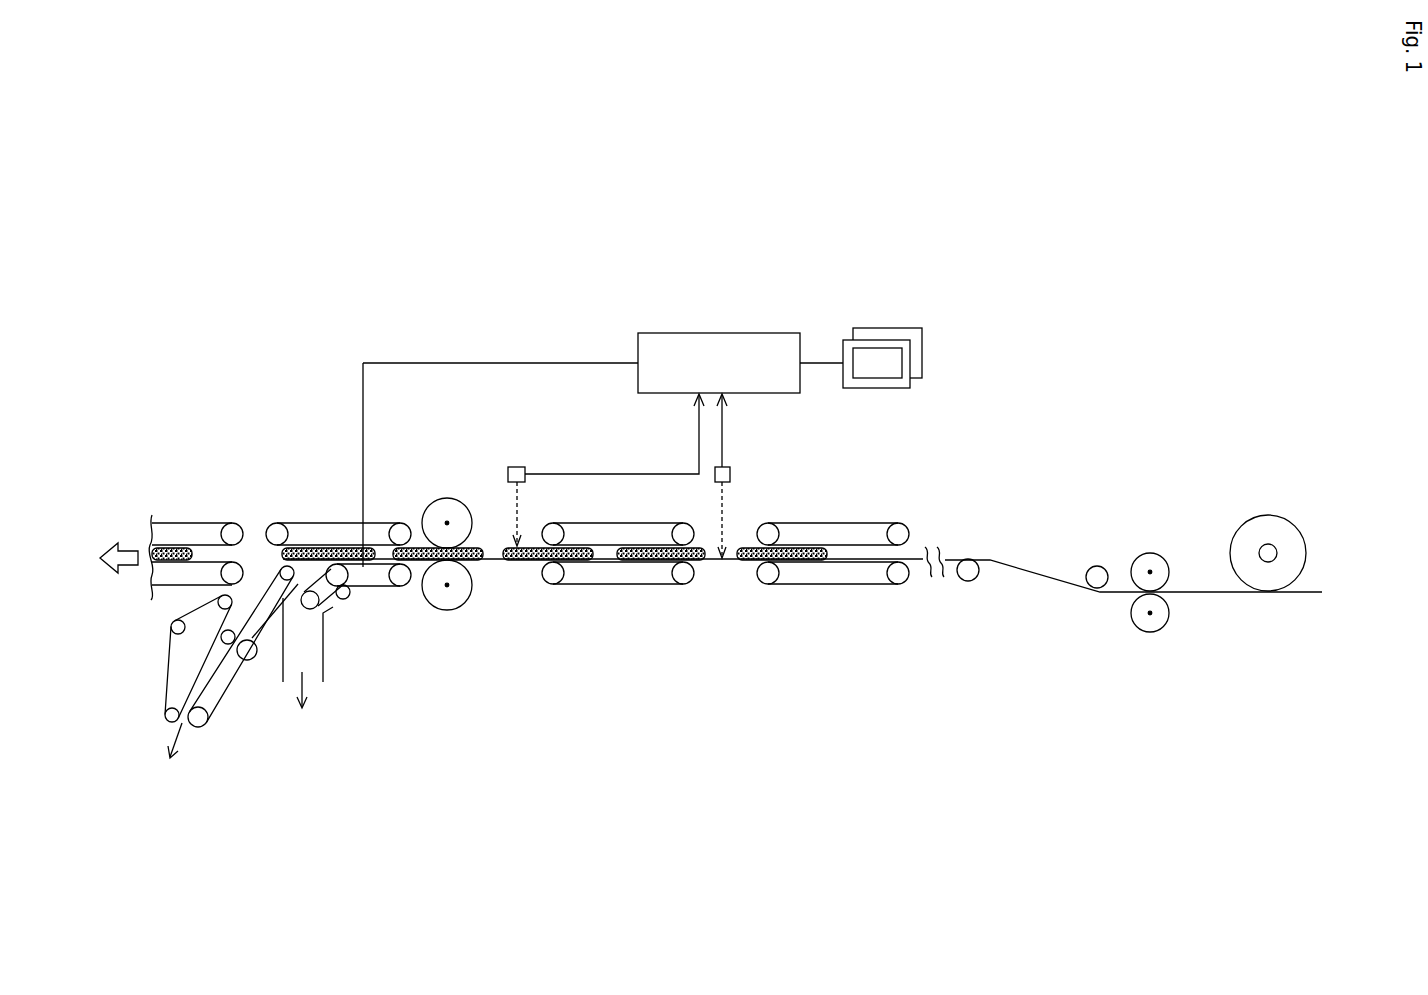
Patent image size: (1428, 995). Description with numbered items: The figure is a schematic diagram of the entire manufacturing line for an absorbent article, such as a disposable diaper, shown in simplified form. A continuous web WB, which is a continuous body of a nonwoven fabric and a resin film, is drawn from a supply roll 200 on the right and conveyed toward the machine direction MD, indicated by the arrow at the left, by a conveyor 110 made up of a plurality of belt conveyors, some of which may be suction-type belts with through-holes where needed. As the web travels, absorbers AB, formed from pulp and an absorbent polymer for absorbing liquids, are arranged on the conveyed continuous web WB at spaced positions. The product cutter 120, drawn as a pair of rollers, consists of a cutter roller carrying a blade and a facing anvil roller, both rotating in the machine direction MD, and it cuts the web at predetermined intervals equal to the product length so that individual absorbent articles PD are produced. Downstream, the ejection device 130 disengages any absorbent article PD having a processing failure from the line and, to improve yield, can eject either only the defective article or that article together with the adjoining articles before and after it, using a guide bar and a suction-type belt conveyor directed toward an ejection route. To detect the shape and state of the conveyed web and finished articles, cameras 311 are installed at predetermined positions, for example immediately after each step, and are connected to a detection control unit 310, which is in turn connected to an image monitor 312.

The conveyor 110 is at (843, 605).
The product cutter 120 is at (473, 611).
The ejection device 130 is at (257, 713).
The material roll 200 is at (1267, 514).
The detection control unit 310 is at (742, 332).
The camera 311 is at (517, 466).
The image monitor 312 is at (902, 330).
The absorber AB is at (753, 562).
The continuous web WB is at (920, 563).
The absorbent article PD is at (333, 550).
The machine direction MD is at (128, 545).